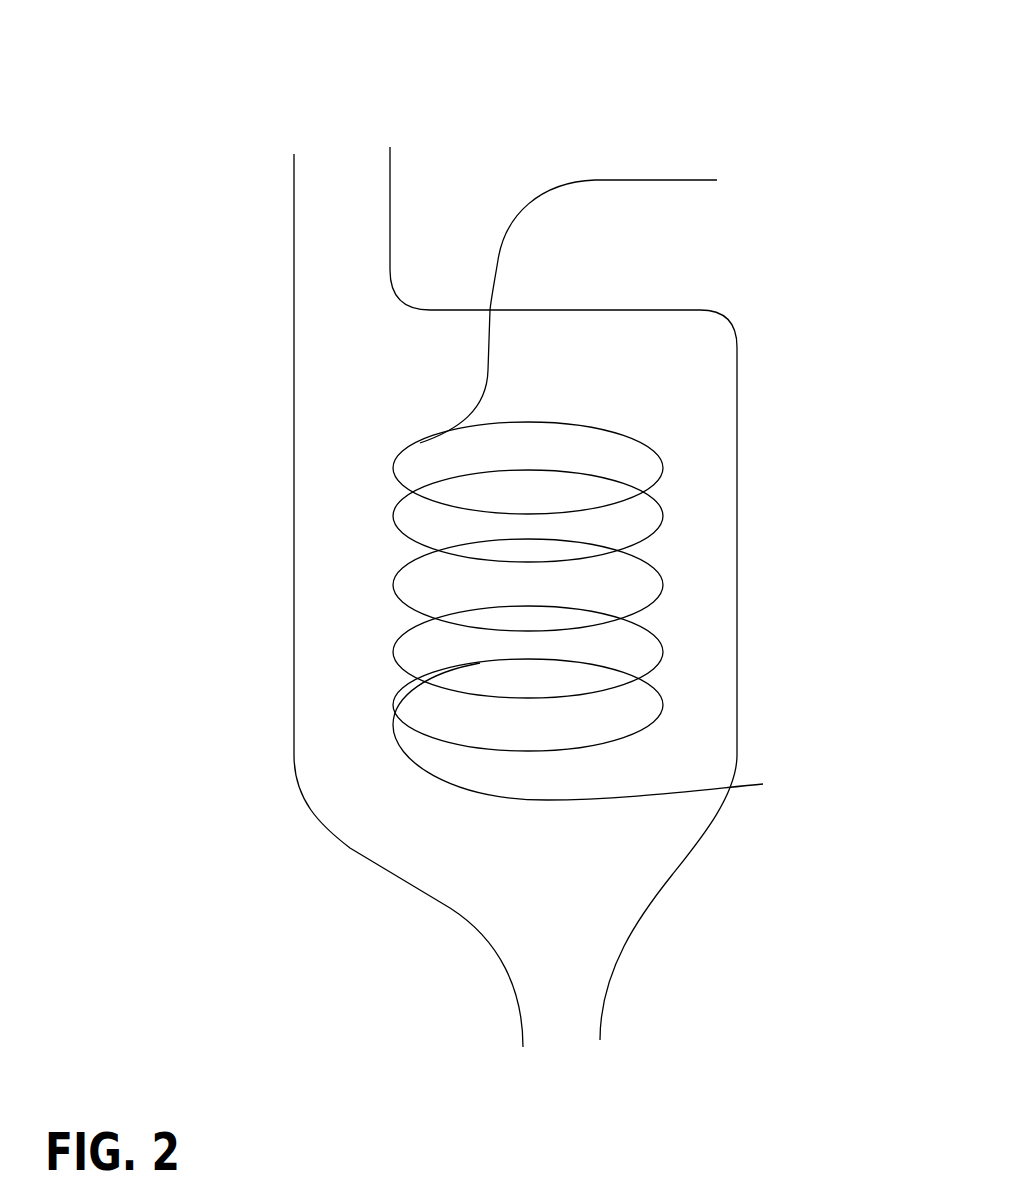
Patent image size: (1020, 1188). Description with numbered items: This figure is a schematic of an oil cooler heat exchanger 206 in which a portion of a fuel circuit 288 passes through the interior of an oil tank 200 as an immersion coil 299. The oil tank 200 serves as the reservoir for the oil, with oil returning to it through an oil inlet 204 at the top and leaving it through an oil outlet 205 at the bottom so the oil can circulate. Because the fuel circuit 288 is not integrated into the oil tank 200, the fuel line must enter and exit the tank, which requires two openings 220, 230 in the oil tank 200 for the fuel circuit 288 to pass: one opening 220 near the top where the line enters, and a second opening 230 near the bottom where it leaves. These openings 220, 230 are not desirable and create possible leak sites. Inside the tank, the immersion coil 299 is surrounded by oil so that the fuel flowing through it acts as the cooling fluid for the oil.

The oil tank 200 is at (774, 474).
The oil inlet 204 is at (342, 188).
The oil outlet 205 is at (568, 967).
The oil cooler heat exchanger 206 is at (892, 153).
The opening 220 is at (504, 290).
The opening 230 is at (758, 758).
The fuel circuit 288 is at (625, 180).
The immersion coil 299 is at (660, 643).